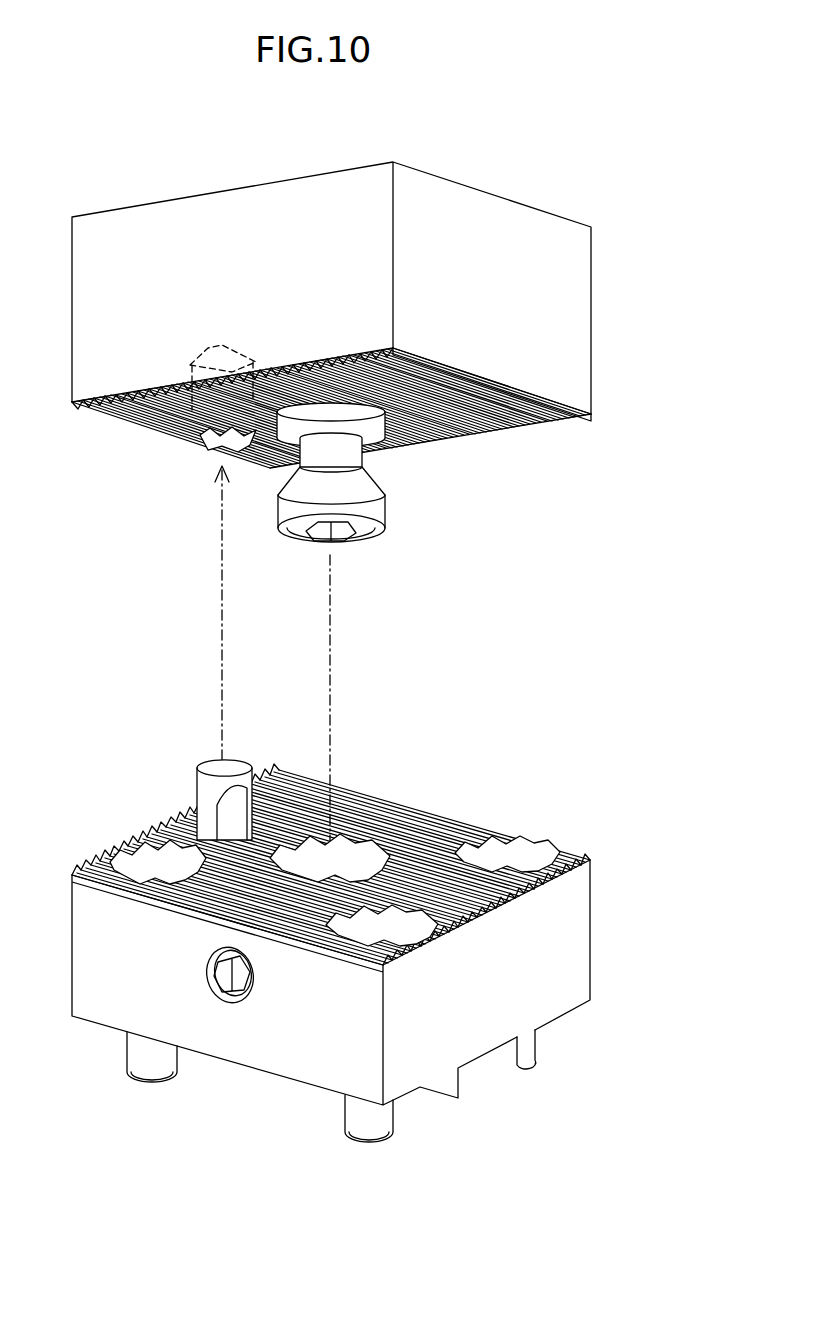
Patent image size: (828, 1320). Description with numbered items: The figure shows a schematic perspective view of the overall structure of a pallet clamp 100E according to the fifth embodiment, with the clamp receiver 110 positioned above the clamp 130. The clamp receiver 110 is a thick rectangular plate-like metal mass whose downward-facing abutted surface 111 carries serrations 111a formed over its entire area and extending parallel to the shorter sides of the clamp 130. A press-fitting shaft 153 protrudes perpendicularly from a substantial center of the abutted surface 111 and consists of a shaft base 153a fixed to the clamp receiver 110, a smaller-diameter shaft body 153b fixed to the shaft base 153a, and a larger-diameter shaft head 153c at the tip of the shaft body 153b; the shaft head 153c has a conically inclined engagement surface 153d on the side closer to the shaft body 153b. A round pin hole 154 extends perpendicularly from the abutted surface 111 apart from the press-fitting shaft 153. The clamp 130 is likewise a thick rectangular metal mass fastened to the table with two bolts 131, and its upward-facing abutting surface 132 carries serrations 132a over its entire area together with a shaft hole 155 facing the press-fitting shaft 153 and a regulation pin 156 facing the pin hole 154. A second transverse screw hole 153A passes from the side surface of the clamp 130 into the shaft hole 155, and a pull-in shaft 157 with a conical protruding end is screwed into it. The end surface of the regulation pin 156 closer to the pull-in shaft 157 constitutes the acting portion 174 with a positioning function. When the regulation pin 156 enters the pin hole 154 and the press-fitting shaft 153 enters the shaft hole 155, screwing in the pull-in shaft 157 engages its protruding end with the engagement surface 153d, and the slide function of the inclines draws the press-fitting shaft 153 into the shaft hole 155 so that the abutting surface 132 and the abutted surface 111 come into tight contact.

The pallet clamp 100E is at (453, 124).
The clamp receiver 110 is at (538, 207).
The abutted surface 111 is at (532, 427).
The serrations 111a is at (140, 430).
The pin hole 154 is at (208, 347).
The press-fitting shaft 153 is at (369, 463).
The shaft base 153a is at (313, 414).
The shaft body 153b is at (345, 454).
The shaft head 153c is at (372, 500).
The engagement surface 153d is at (345, 546).
The clamp 130 is at (608, 927).
The abutting surface 132 is at (455, 840).
The serrations 132a is at (188, 912).
The shaft hole 155 is at (360, 860).
The regulation pin 156 is at (205, 785).
The acting portion 174 is at (200, 810).
The bolts 131 is at (133, 1055).
The second transverse screw hole 153A is at (233, 1003).
The pull-in shaft 157 is at (218, 997).